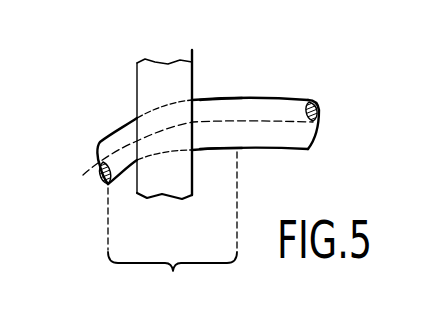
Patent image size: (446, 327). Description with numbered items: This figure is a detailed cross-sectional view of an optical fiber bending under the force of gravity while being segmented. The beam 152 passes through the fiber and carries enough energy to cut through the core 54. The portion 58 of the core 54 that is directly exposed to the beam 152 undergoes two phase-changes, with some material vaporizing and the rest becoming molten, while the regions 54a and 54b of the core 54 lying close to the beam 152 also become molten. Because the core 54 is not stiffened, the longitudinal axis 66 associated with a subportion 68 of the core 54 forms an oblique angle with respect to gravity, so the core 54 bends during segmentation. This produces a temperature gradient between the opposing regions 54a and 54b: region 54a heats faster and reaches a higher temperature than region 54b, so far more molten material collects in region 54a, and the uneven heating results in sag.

The beam 152 is at (192, 62).
The core 54 is at (285, 104).
The region 54a is at (207, 110).
The region 54b is at (206, 141).
The portion 58 is at (162, 118).
The longitudinal axis 66 is at (328, 128).
The subportion 68 is at (172, 228).